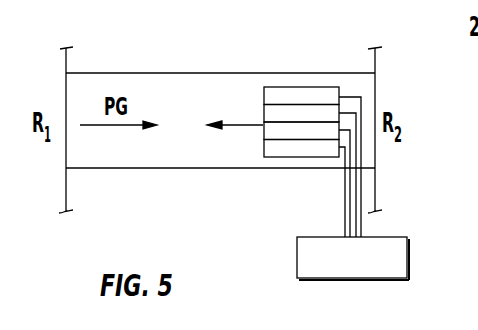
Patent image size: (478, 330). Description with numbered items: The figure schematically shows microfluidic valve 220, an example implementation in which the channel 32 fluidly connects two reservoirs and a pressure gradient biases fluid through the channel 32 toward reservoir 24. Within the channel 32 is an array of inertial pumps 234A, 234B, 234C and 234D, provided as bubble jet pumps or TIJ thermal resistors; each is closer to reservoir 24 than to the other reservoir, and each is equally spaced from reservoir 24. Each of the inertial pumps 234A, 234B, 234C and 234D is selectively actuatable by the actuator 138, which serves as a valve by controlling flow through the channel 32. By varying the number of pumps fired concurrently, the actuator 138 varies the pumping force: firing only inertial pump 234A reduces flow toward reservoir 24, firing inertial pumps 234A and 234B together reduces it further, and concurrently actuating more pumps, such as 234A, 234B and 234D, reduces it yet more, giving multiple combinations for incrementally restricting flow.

The microfluidic valve 220 is at (135, 45).
The channel 32 is at (190, 73).
The inertial pump 234A is at (285, 87).
The inertial pump 234B is at (263, 112).
The inertial pump 234C is at (262, 132).
The inertial pump 234D is at (284, 157).
The reservoir 24 is at (385, 155).
The actuator 138 is at (333, 280).